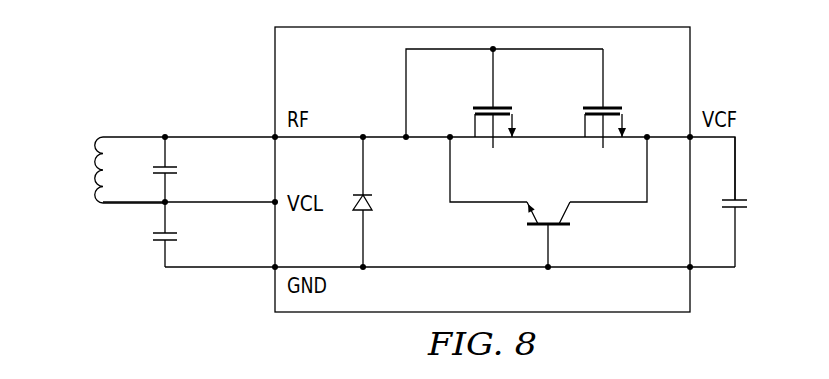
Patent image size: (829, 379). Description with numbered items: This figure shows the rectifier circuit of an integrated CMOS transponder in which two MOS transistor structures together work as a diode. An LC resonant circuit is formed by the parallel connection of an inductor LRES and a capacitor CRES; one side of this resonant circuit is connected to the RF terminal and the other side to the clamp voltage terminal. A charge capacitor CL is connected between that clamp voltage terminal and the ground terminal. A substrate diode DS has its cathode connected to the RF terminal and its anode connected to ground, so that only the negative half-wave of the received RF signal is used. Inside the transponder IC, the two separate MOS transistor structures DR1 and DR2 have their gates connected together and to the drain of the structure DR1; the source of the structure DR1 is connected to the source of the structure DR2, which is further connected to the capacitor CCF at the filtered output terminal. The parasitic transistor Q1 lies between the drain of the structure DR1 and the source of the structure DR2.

The inductor LRES is at (100, 170).
The capacitor CRES is at (192, 169).
The charge capacitor CL is at (180, 234).
The substrate diode DS is at (379, 202).
The MOS transistor structure DR1 is at (506, 113).
The MOS transistor structure DR2 is at (617, 113).
The parasitic transistor Q1 is at (548, 223).
The capacitor CCF is at (756, 202).